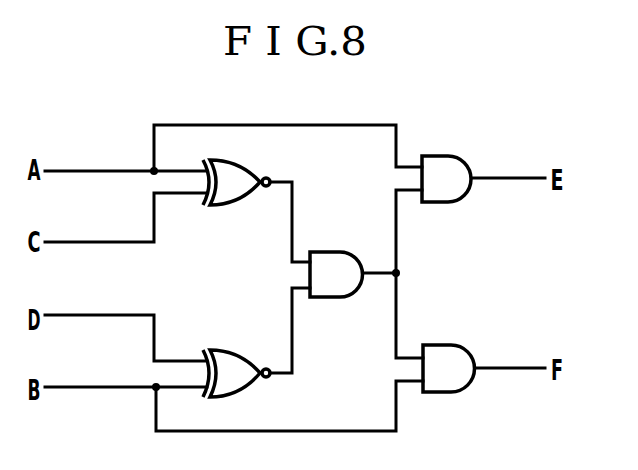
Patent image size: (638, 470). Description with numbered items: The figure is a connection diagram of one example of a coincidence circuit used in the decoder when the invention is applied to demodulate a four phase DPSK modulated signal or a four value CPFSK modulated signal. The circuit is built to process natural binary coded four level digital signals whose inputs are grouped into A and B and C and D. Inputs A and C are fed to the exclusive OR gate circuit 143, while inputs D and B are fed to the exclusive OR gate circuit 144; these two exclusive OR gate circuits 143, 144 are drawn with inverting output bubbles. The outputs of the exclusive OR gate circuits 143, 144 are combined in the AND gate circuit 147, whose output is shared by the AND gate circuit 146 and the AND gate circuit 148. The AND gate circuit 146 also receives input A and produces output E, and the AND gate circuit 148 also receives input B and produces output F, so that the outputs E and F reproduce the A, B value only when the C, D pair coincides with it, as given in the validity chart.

The exclusive OR gate circuit 143 is at (236, 182).
The exclusive OR gate circuit 144 is at (236, 373).
The AND gate circuit 146 is at (446, 179).
The AND gate circuit 147 is at (336, 274).
The AND gate circuit 148 is at (448, 368).